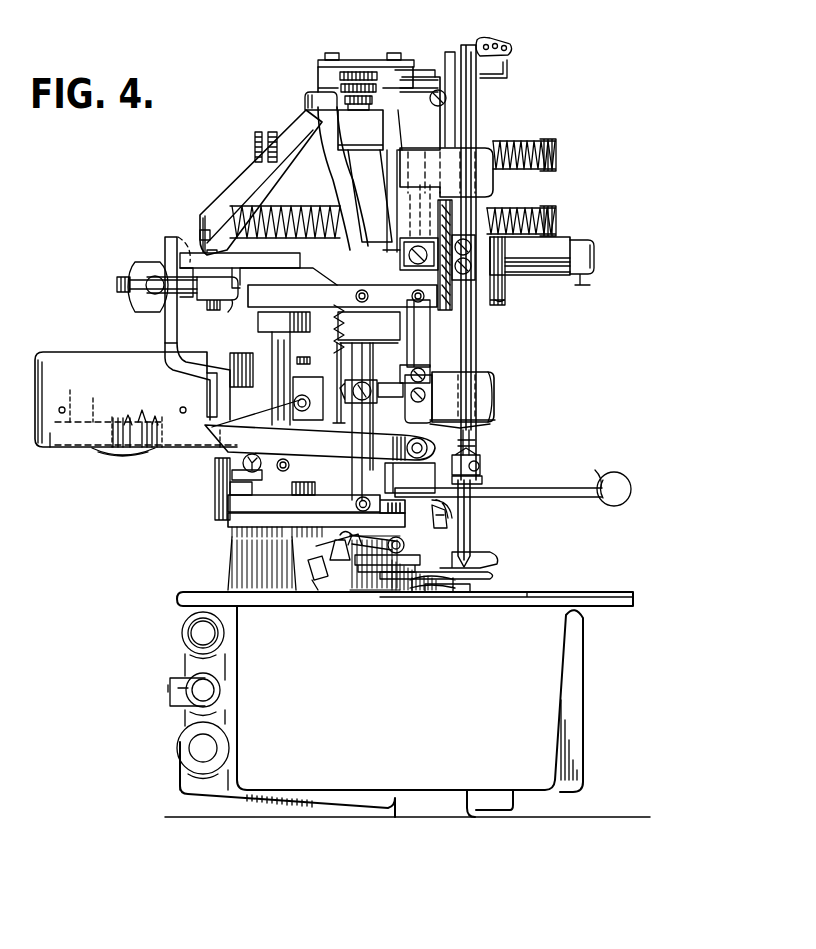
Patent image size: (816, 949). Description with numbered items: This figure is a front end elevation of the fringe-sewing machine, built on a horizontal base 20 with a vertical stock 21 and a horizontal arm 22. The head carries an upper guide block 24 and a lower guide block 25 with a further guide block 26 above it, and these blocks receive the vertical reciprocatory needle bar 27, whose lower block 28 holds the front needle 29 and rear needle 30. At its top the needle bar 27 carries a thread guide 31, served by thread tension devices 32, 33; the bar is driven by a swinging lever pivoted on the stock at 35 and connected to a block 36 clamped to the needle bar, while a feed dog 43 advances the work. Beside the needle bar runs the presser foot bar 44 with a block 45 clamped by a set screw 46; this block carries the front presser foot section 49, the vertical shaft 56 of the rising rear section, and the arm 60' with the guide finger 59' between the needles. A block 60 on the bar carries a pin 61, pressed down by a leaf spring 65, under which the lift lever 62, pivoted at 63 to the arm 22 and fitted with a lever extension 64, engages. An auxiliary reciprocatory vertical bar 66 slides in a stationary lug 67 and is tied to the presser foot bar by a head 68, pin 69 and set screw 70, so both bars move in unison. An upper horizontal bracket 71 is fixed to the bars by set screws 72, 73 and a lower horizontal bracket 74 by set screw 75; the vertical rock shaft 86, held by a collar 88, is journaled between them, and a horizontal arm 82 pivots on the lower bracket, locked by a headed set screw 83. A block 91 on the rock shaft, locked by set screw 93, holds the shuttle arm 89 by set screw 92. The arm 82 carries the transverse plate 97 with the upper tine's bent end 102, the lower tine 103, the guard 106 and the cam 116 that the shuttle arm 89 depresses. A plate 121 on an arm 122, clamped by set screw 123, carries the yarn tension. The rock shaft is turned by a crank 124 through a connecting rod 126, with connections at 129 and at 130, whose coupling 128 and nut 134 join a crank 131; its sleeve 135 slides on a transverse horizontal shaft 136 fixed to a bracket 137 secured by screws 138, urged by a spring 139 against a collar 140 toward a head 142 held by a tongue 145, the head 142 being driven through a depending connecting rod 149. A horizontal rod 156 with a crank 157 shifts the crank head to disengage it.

The horizontal base 20 is at (606, 597).
The vertical stock 21 is at (230, 566).
The horizontal arm 22 is at (425, 101).
The upper guide block 24 is at (495, 190).
The lower guide block 25 is at (495, 420).
The guide block 26 is at (495, 394).
The needle bar 27 is at (479, 110).
The block 28 is at (484, 463).
The front needle 29 is at (478, 540).
The rear needle 30 is at (478, 522).
The thread guide 31 is at (512, 50).
The thread tension device 32 is at (558, 158).
The thread tension device 33 is at (560, 216).
The pivot 35 is at (504, 307).
The block 36 is at (492, 255).
The feed dog 43 is at (404, 600).
The presser foot bar 44 is at (438, 205).
The block 45 is at (435, 596).
The set screw 46 is at (392, 552).
The front presser foot section 49 is at (496, 577).
The vertical shaft 56 is at (460, 524).
The guide finger 59' is at (510, 564).
The block 60 is at (419, 214).
The arm 60' is at (446, 627).
The pin 61 is at (392, 235).
The lift lever 62 is at (328, 188).
The pivot 63 is at (366, 101).
The lever extension 64 is at (228, 200).
The leaf spring 65 is at (370, 196).
The auxiliary reciprocatory vertical bar 66 is at (352, 368).
The stationary lug 67 is at (336, 338).
The head 68 is at (366, 382).
The pin 69 is at (389, 388).
The set screw 70 is at (411, 399).
The upper horizontal bracket 71 is at (334, 287).
The set screw 72 is at (411, 296).
The set screw 73 is at (350, 296).
The lower horizontal bracket 74 is at (316, 505).
The set screw 75 is at (350, 505).
The horizontal arm 82 is at (228, 518).
The headed set screw 83 is at (235, 490).
The vertical rock shaft 86 is at (272, 347).
The collar 88 is at (258, 325).
The shuttle arm 89 is at (245, 451).
The block 91 is at (230, 477).
The set screw 92 is at (215, 463).
The set screw 93 is at (287, 461).
The horizontal transverse plate 97 is at (325, 570).
The upwardly bent free end 102 is at (348, 545).
The lower horizontal tine 103 is at (375, 570).
The guard 106 is at (310, 590).
The cam 116 is at (490, 470).
The plate 121 is at (118, 412).
The arm 122 is at (320, 442).
The set screw 123 is at (478, 440).
The crank 124 is at (238, 262).
The connecting rod 126 is at (155, 300).
The coupling 128 is at (145, 263).
The universal pivotal connection 129 is at (213, 292).
The pivotal universal connection 130 is at (126, 276).
The crank 131 is at (180, 352).
The nut 134 is at (169, 280).
The sleeve 135 is at (175, 452).
The transverse horizontal shaft 136 is at (63, 400).
The bracket 137 is at (322, 424).
The screws 138 is at (308, 388).
The spring 139 is at (128, 420).
The collar 140 is at (81, 399).
The head 142 is at (232, 403).
The tongue 145 is at (218, 426).
The connecting rod 149 is at (272, 606).
The horizontal rod 156 is at (596, 478).
The crank 157 is at (632, 489).